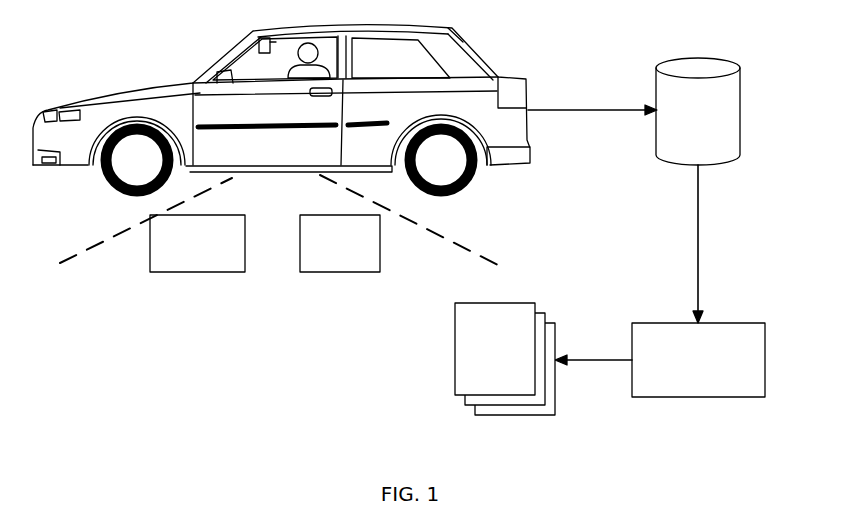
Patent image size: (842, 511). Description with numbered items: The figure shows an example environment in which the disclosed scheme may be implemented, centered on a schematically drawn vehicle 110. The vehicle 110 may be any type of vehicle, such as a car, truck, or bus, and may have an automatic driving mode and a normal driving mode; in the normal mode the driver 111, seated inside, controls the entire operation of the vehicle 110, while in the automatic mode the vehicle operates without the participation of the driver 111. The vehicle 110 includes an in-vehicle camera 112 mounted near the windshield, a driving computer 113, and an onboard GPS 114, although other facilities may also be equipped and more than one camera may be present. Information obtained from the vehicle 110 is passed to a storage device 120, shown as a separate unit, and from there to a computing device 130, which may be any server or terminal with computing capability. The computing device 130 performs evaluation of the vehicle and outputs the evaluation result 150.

The vehicle 110 is at (448, 32).
The driver 111 is at (310, 43).
The in-vehicle camera 112 is at (263, 38).
The driving computer 113 is at (245, 255).
The onboard GPS 114 is at (380, 255).
The storage device 120 is at (713, 54).
The computing device 130 is at (732, 323).
The evaluation result 150 is at (525, 302).